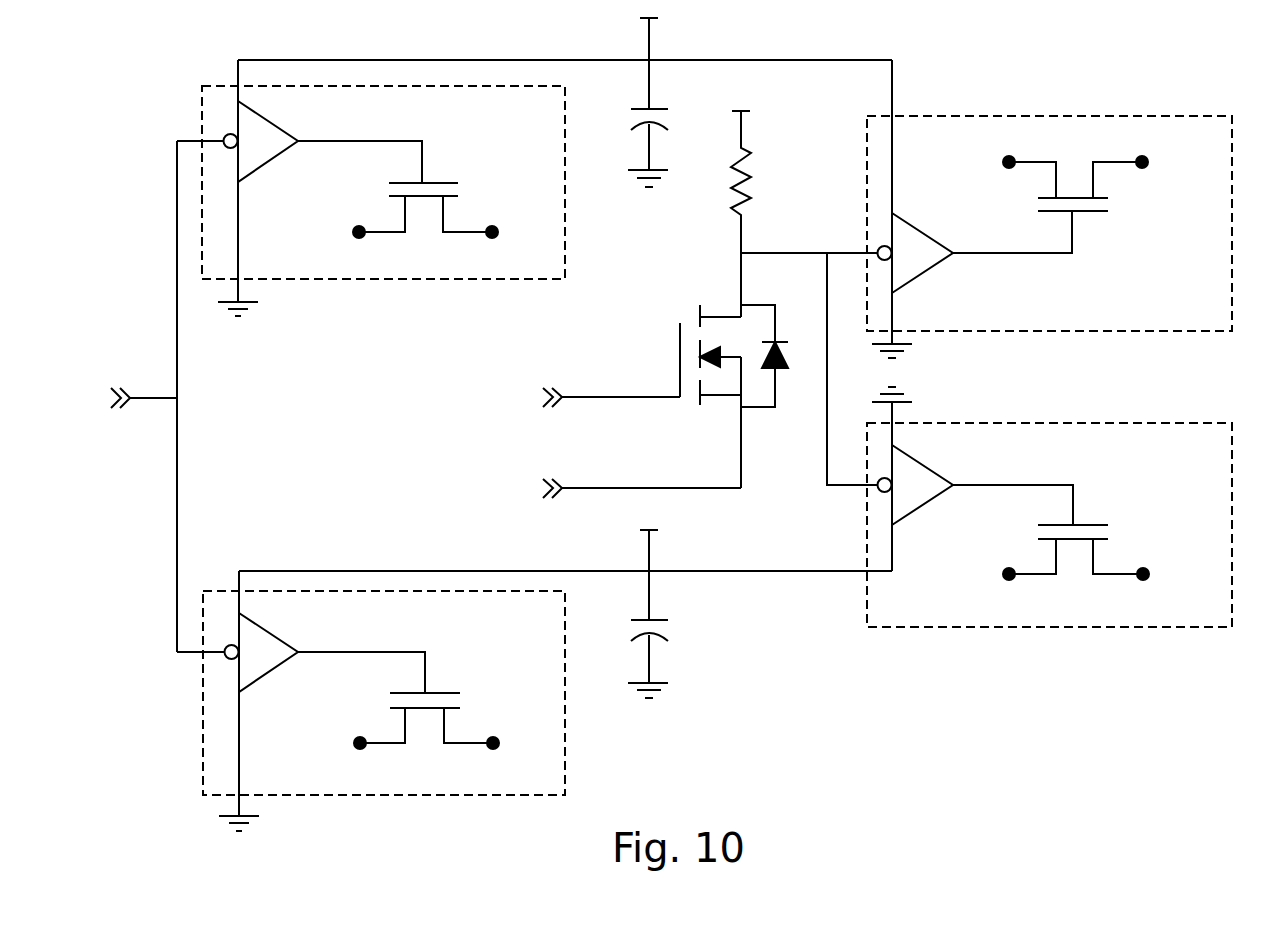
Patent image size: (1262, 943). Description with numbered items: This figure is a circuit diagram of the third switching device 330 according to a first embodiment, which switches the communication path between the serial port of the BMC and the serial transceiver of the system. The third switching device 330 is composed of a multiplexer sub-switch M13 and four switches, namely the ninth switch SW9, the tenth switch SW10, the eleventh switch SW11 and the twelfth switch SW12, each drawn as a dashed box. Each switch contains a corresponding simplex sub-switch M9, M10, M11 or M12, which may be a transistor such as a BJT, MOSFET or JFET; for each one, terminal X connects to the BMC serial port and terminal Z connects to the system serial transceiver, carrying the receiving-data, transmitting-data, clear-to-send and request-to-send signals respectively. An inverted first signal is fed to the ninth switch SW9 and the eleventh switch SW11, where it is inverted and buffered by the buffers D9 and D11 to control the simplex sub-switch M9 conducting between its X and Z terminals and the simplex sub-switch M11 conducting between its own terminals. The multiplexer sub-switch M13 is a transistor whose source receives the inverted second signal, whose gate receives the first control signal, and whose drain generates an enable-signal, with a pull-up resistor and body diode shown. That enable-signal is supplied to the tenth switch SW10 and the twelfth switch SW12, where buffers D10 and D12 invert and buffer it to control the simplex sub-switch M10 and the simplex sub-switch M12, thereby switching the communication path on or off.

The third switching device 330 is at (647, 424).
The ninth switch SW9 is at (371, 220).
The tenth switch SW10 is at (1049, 196).
The eleventh switch SW11 is at (319, 693).
The twelfth switch SW12 is at (1049, 563).
The simplex sub-switch M9 is at (465, 180).
The simplex sub-switch M10 is at (1115, 215).
The simplex sub-switch M11 is at (468, 690).
The simplex sub-switch M12 is at (1118, 520).
The multiplexer sub-switch M13 is at (681, 308).
The buffer D9 is at (260, 167).
The buffer D10 is at (915, 278).
The buffer D11 is at (262, 678).
The buffer D12 is at (915, 512).